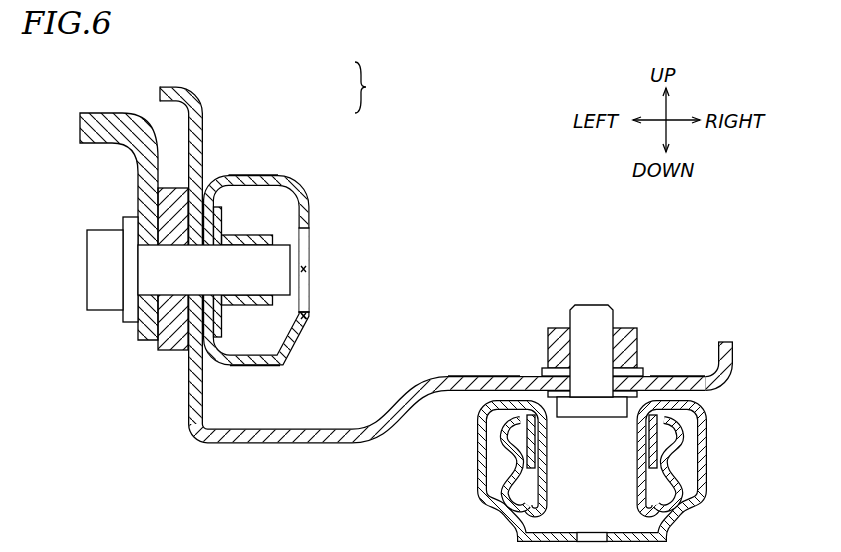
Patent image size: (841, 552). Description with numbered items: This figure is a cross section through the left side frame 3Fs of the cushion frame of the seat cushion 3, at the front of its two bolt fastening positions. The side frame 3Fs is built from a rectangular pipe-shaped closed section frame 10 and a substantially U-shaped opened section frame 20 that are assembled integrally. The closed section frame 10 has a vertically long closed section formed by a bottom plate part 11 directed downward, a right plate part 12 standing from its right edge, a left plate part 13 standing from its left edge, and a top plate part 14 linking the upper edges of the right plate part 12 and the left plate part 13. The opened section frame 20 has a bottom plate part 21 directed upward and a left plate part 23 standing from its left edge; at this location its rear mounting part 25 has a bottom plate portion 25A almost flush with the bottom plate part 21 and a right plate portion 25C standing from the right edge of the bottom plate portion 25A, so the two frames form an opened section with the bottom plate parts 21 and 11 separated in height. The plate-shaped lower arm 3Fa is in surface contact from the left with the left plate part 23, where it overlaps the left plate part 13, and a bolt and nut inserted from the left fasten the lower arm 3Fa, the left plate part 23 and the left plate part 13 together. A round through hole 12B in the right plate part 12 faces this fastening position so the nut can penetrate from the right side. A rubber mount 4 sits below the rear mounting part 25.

The seat cushion 3 is at (500, 122).
The lower arm 3Fa is at (105, 128).
The side frame 3Fs is at (398, 87).
The opened section frame 20 is at (205, 135).
The left plate part 23 is at (195, 373).
The bottom plate part 21 is at (268, 445).
The rear mounting part 25 is at (487, 375).
The bottom plate portion 25A is at (677, 380).
The right plate portion 25C is at (723, 343).
The closed section frame 10 is at (342, 115).
The top plate part 14 is at (263, 179).
The right plate part 12 is at (306, 316).
The round through hole 12B is at (306, 269).
The bottom plate part 11 is at (245, 362).
The left plate part 13 is at (187, 327).
The elastic rubber mount body 4 is at (478, 461).